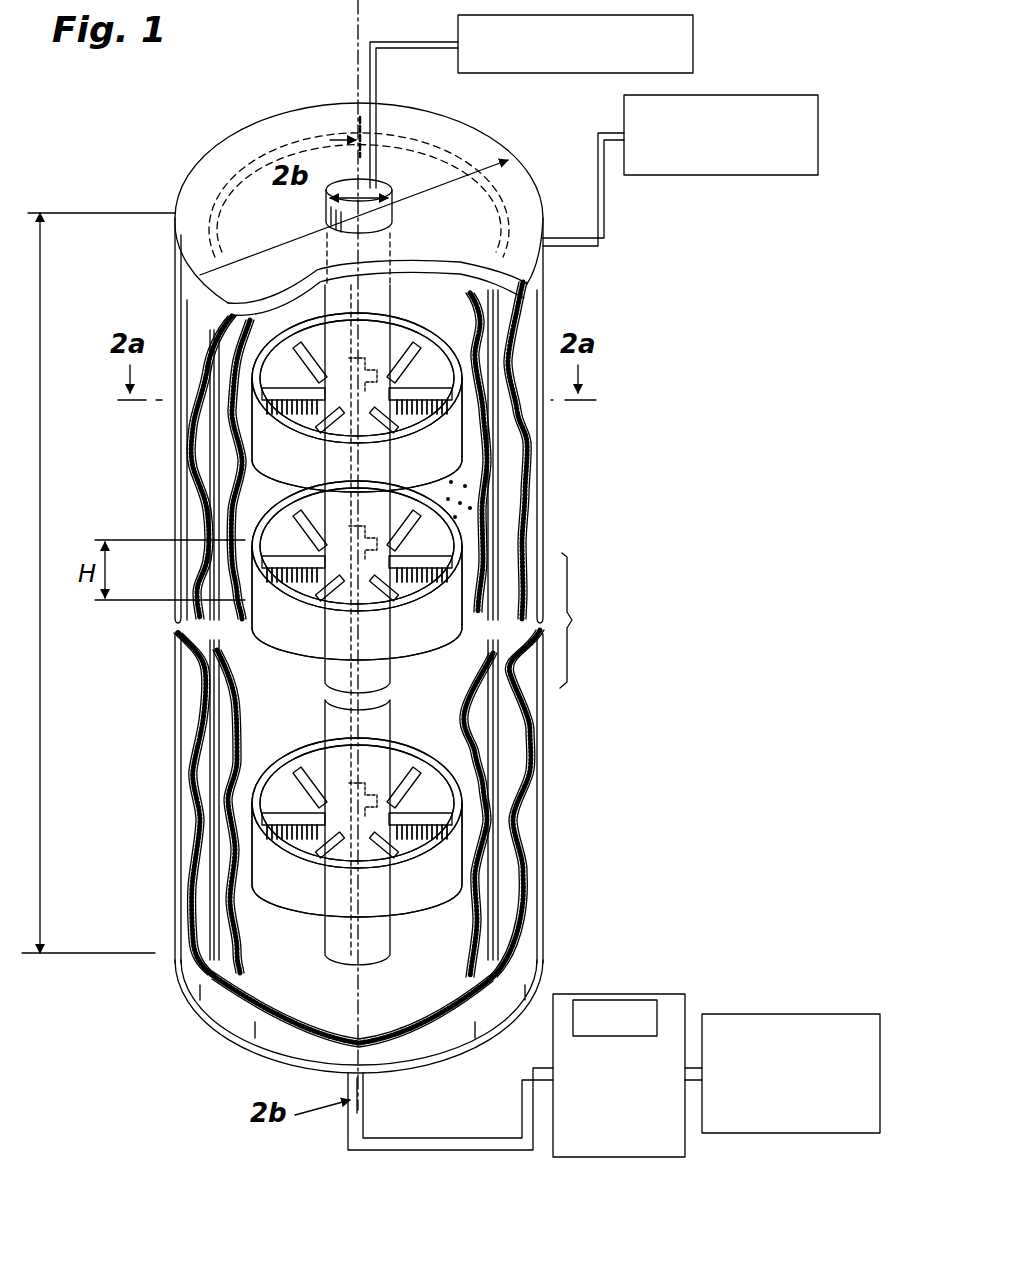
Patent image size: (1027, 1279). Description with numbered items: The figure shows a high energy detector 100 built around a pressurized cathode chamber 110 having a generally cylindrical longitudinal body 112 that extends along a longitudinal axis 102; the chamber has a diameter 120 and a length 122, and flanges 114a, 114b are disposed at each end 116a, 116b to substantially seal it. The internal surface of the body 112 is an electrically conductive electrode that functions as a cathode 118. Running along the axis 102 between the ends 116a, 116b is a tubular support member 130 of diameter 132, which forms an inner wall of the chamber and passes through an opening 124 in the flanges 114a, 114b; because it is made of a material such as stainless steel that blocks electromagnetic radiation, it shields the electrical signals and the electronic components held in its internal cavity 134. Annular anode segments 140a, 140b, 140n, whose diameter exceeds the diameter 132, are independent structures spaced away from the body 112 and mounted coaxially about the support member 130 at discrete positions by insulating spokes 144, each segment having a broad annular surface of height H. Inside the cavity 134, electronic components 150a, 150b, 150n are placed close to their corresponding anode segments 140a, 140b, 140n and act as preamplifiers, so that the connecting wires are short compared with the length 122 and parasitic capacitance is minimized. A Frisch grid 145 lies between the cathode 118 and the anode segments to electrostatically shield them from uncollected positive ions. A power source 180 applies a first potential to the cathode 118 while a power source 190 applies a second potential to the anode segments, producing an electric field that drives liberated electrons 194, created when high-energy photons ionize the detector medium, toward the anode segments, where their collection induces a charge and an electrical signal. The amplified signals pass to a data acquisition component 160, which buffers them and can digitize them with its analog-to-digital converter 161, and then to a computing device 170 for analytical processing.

The high energy detector 100 is at (168, 168).
The longitudinal axis 102 is at (350, 73).
The pressurized cathode chamber 110 is at (170, 305).
The longitudinal body 112 is at (182, 712).
The flange 114a is at (522, 225).
The flange 114b is at (425, 1065).
The end of the chamber 116a is at (218, 138).
The end of the chamber 116b is at (218, 1040).
The cathode 118 is at (193, 452).
The diameter 120 is at (423, 188).
The length 122 is at (33, 577).
The opening 124 is at (393, 215).
The support member 130 is at (382, 670).
The diameter 132 is at (328, 200).
The internal cavity 134 is at (347, 305).
The anode segment 140a is at (432, 288).
The anode segment 140b is at (270, 640).
The anode segment 140n is at (288, 905).
The spokes 144 is at (296, 408).
The Frisch grid 145 is at (488, 500).
The electronic component 150a is at (362, 372).
The electronic component 150b is at (378, 578).
The electronic component 150n is at (372, 825).
The data acquisition component 160 is at (672, 993).
The analog-to-digital converter 161 is at (590, 995).
The computing device 170 is at (785, 1013).
The power source 180 is at (760, 178).
The power source 190 is at (562, 73).
The liberated electrons 194 is at (462, 480).